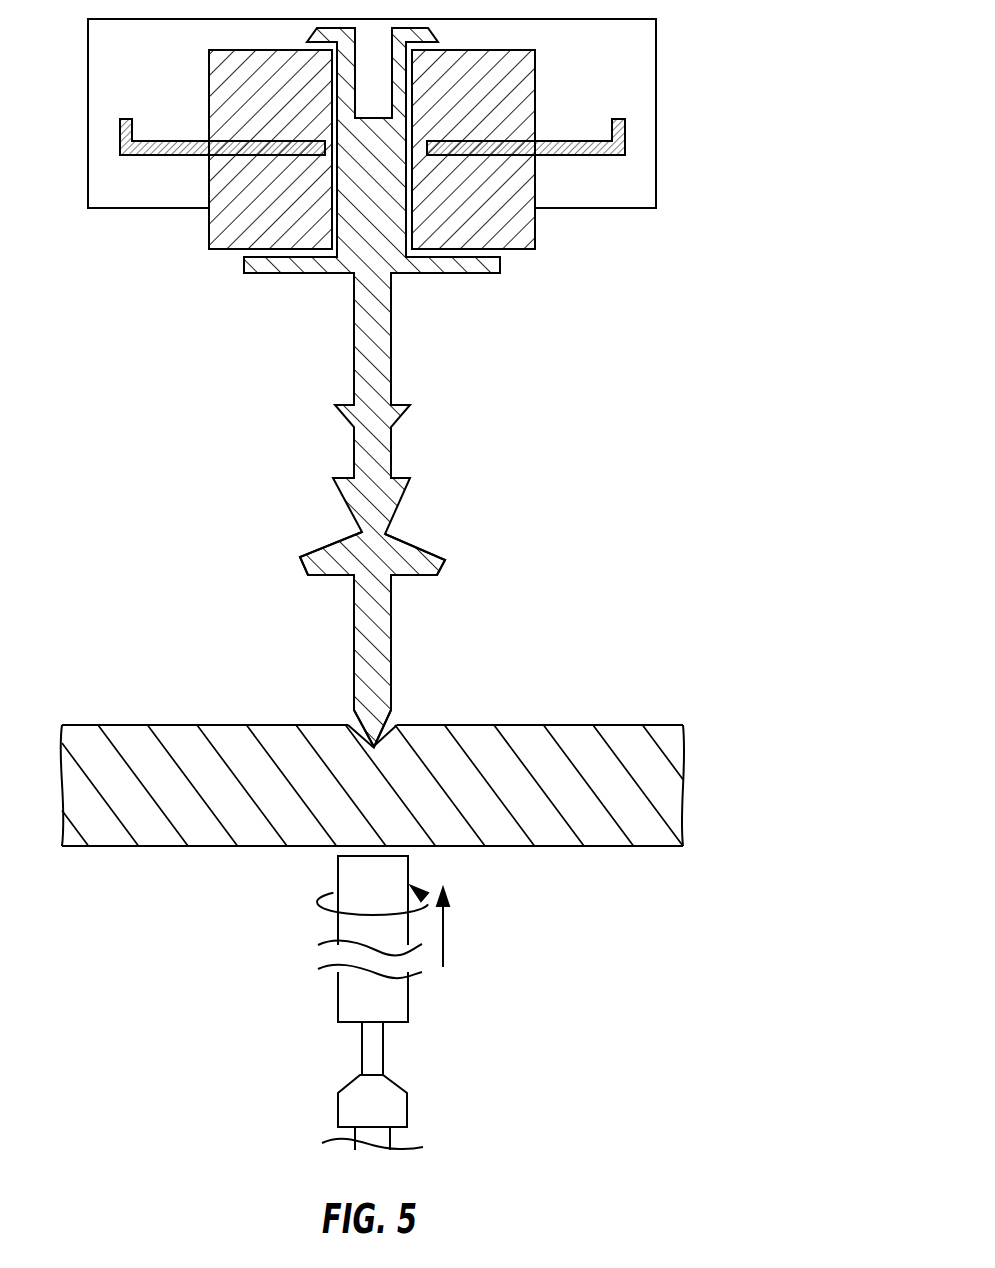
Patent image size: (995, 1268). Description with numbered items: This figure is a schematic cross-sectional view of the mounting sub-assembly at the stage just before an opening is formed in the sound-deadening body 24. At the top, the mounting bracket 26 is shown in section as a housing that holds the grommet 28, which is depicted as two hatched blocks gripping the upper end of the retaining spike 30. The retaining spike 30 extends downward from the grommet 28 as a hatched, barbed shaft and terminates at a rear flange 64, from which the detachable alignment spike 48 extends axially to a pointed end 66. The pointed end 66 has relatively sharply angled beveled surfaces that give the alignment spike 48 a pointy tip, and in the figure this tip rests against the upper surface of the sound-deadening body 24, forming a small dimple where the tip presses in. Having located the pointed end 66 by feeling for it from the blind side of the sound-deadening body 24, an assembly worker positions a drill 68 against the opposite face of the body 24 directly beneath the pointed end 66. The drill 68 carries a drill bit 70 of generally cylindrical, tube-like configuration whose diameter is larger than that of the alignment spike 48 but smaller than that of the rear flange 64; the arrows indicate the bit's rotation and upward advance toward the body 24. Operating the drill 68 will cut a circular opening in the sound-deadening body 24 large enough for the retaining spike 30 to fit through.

The sound-deadening body 24 is at (563, 725).
The mounting bracket 26 is at (102, 173).
The grommet 28 is at (223, 228).
The retaining spike 30 is at (404, 343).
The alignment spike 48 is at (313, 538).
The rear flange 64 is at (445, 563).
The pointed end 66 is at (377, 747).
The drill 68 is at (407, 1107).
The drill bit 70 is at (408, 992).